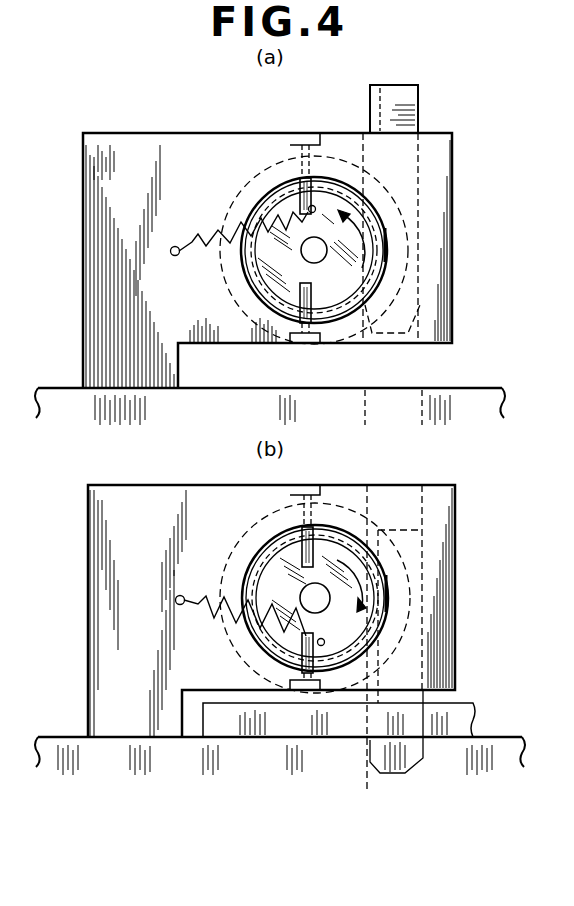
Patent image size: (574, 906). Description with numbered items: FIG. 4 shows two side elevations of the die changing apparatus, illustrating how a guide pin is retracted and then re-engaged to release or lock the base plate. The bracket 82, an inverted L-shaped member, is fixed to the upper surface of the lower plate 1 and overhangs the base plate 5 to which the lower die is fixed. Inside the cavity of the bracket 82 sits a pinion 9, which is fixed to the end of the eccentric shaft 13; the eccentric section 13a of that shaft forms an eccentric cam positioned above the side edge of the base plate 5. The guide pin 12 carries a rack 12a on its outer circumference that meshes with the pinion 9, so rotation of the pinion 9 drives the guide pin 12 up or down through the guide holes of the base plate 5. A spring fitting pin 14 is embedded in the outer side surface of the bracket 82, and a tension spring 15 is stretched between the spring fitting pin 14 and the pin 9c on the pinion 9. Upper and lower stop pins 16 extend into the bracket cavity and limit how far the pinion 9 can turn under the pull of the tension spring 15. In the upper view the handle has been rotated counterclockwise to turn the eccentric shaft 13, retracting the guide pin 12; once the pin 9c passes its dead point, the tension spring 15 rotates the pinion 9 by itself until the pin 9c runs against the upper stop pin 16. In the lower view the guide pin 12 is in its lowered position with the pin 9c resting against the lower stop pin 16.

The lower plate 1 is at (472, 396).
The base plate 5 is at (462, 720).
The pinion 9 is at (293, 273).
The pin 9c is at (316, 211).
The guide pin 12 is at (412, 100).
The rack 12a is at (370, 100).
The eccentric shaft 13 is at (308, 696).
The eccentric section 13a is at (268, 166).
The spring fitting pin 14 is at (175, 257).
The tension spring 15 is at (231, 252).
The stop pin 16 is at (300, 197).
The bracket 82 is at (150, 145).